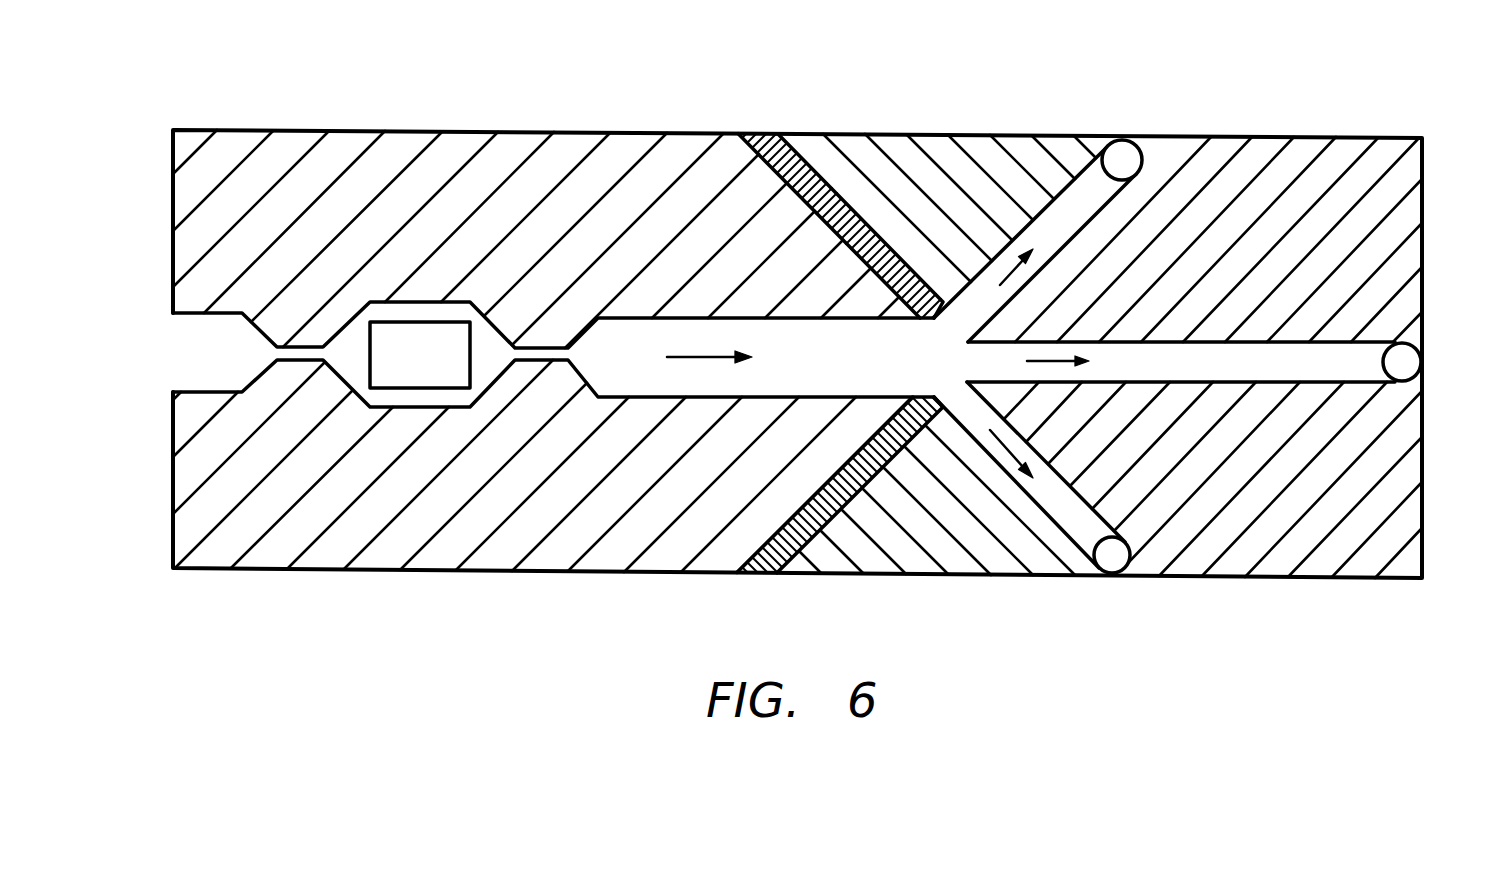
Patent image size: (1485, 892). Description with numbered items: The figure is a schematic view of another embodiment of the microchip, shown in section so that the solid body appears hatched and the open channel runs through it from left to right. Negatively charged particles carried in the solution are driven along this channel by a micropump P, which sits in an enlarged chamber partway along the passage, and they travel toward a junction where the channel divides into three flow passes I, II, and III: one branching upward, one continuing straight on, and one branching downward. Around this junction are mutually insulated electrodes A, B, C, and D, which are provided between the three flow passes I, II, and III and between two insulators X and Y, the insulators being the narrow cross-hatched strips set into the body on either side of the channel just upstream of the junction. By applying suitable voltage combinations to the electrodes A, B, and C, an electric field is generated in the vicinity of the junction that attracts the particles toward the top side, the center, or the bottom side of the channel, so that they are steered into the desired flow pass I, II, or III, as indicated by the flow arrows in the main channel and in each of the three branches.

The micropump P is at (410, 308).
The insulator X is at (750, 137).
The insulator Y is at (752, 560).
The electrode A is at (931, 146).
The electrode B is at (1314, 140).
The electrode C is at (1268, 570).
The electrode D is at (883, 563).
The flow pass I is at (1082, 182).
The flow pass II is at (1368, 348).
The flow pass III is at (1080, 538).